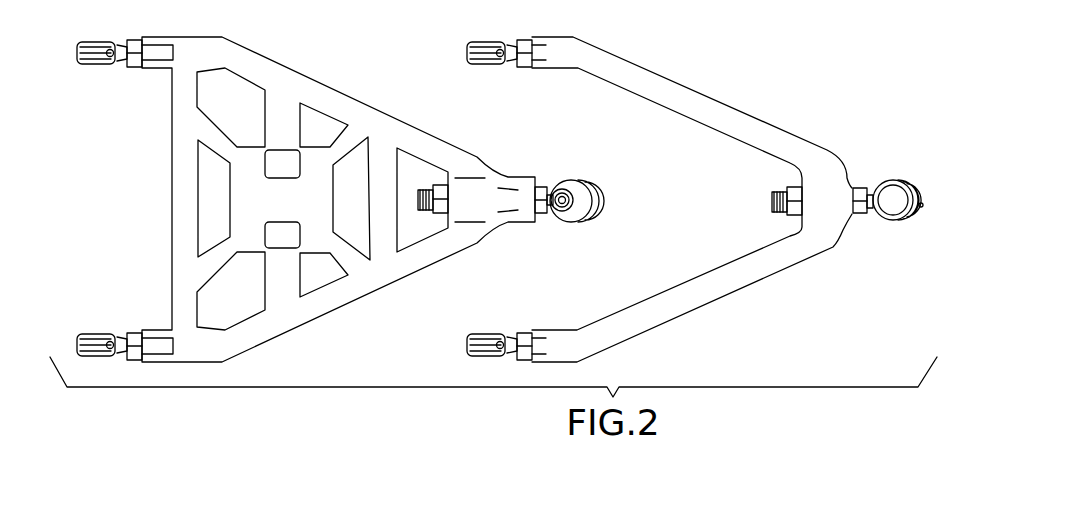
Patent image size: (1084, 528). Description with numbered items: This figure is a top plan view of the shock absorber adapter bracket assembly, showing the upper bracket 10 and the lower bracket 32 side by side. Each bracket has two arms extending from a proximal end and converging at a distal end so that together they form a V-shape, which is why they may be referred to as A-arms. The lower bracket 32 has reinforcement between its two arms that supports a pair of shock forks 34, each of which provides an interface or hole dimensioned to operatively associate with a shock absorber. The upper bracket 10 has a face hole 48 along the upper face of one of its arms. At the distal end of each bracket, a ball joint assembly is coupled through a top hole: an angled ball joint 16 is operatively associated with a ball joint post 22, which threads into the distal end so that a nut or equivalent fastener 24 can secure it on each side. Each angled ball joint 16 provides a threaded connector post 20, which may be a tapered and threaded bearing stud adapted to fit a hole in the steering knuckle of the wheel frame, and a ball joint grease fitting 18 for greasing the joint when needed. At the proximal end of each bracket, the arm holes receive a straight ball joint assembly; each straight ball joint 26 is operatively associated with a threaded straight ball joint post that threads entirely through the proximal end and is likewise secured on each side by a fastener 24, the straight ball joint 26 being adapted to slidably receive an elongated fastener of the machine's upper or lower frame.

The upper bracket 10 is at (770, 127).
The angled ball joint 16 is at (587, 178).
The ball joint grease fitting 18 is at (557, 220).
The threaded connector post 20 is at (563, 205).
The ball joint post 22 is at (427, 190).
The fastener 24 is at (133, 40).
The straight ball joint 26 is at (103, 43).
The lower bracket 32 is at (342, 295).
The shock fork 34 is at (277, 160).
The face hole 48 is at (740, 278).